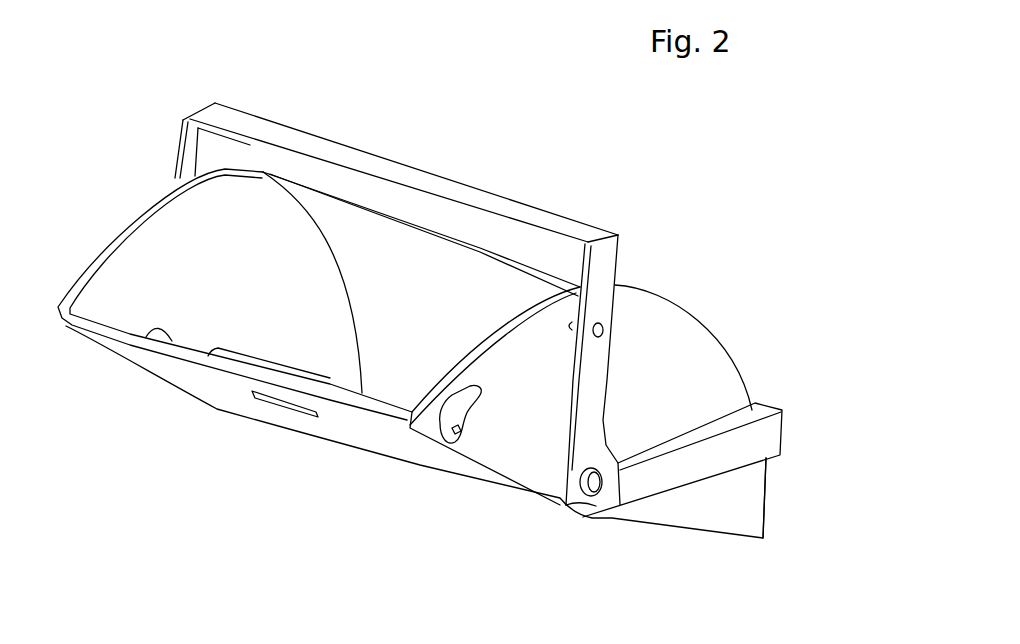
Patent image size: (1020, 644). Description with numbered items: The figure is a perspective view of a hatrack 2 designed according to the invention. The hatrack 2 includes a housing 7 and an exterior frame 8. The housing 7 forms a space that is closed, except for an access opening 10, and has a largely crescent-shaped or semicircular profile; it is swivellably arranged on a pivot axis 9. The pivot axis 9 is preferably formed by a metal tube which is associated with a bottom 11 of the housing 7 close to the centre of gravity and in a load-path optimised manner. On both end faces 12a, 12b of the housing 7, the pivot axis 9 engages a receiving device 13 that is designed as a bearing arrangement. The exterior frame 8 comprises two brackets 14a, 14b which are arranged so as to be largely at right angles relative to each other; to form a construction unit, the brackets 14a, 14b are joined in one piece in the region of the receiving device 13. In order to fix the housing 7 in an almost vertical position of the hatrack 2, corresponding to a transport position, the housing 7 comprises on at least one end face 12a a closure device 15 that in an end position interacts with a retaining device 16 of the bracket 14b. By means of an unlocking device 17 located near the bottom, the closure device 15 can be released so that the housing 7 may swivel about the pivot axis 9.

The hatrack 2 is at (700, 279).
The housing 7 is at (693, 551).
The exterior frame 8 is at (168, 114).
The pivot axis 9 is at (603, 484).
The access opening 10 is at (402, 367).
The bottom 11 is at (139, 348).
The end face 12a is at (717, 377).
The end face 12b is at (118, 222).
The receiving device 13 is at (585, 505).
The bracket 14a is at (770, 437).
The bracket 14b is at (607, 258).
The closure device 15 is at (446, 444).
The retaining device 16 is at (566, 327).
The unlocking device 17 is at (280, 413).